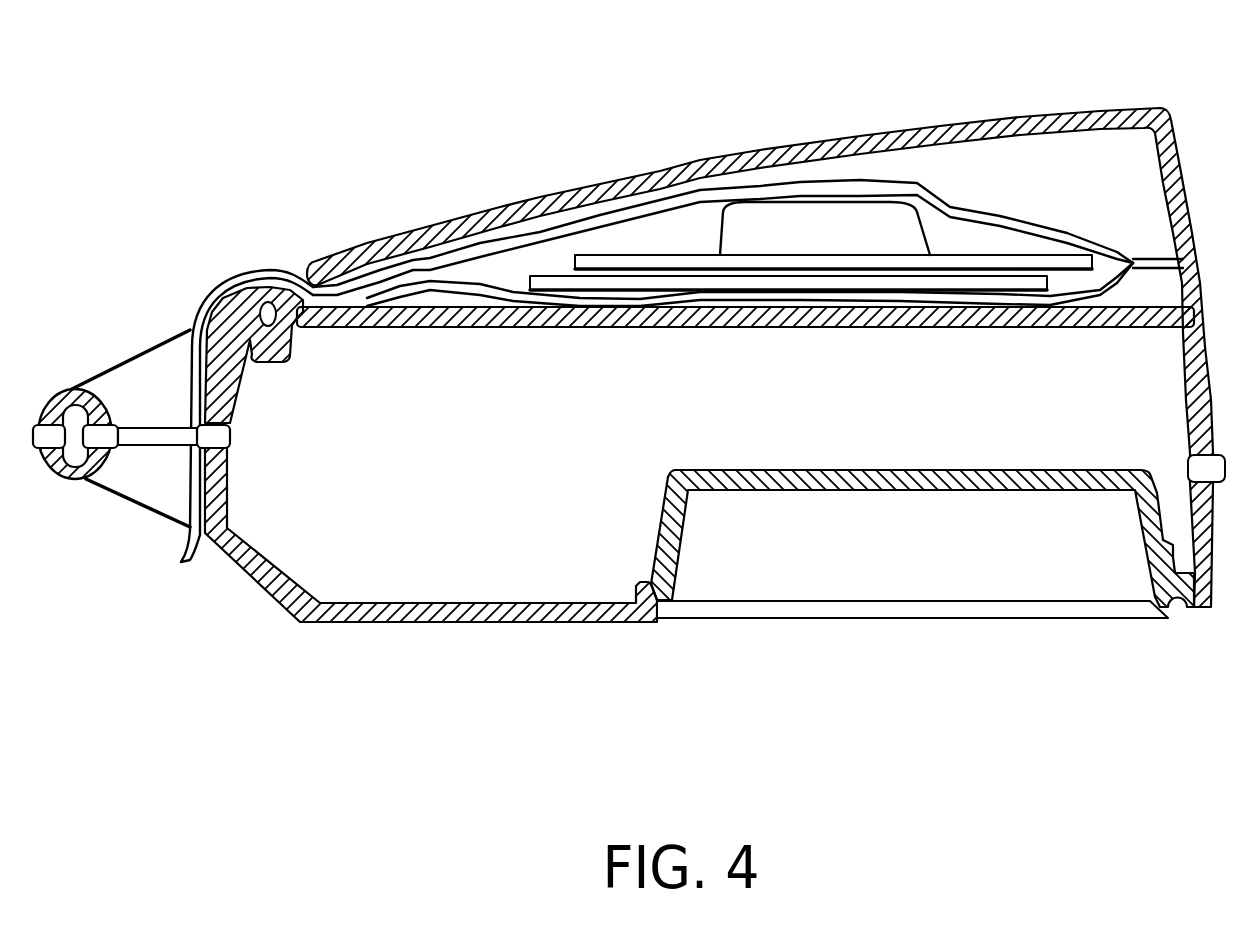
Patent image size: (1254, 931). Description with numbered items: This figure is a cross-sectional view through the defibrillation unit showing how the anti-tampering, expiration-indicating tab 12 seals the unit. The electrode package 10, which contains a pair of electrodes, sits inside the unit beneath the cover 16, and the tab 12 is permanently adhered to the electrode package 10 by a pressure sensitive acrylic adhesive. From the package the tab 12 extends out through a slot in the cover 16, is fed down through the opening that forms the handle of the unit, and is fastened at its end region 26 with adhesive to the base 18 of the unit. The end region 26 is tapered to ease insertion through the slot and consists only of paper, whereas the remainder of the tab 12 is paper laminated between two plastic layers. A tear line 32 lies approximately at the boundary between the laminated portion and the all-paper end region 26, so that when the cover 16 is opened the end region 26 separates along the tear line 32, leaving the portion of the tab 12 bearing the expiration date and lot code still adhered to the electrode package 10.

The electrode package 10 is at (602, 224).
The anti-tampering, expiration-indicating tab 12 is at (238, 274).
The cover 16 is at (985, 122).
The base 18 is at (455, 625).
The end region 26 is at (192, 485).
The tear line 32 is at (827, 205).